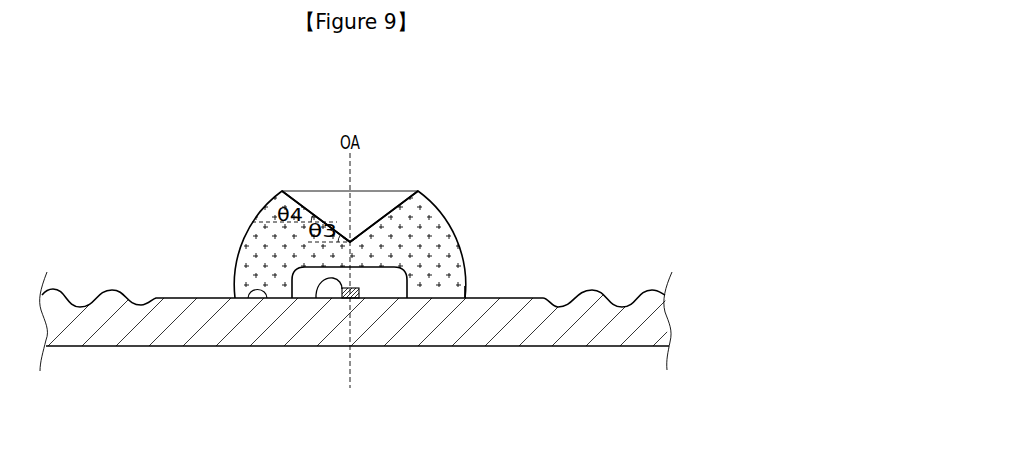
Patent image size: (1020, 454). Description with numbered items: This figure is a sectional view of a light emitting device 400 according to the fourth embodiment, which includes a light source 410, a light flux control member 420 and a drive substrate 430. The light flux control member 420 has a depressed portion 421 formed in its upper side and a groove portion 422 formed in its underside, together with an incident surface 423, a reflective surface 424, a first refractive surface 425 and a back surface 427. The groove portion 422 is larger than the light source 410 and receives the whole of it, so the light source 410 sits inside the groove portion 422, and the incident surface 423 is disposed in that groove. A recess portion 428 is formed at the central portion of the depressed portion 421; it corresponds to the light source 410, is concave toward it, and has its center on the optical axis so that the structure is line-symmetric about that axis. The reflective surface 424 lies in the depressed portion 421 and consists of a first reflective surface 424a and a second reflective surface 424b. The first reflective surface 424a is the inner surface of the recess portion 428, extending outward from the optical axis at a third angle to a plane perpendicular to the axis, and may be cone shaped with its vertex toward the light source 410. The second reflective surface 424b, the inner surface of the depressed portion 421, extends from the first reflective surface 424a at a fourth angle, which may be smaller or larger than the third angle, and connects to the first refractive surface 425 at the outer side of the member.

The light emitting device 400 is at (668, 97).
The light source 410 is at (360, 289).
The light flux control member 420 is at (398, 162).
The depressed portion 421 is at (323, 197).
The groove portion 422 is at (293, 297).
The incident surface 423 is at (316, 298).
The reflective surface 424 is at (504, 187).
The first reflective surface 424a is at (372, 238).
The second reflective surface 424b is at (399, 204).
The first refractive surface 425 is at (465, 270).
The back surface 427 is at (251, 299).
The recess portion 428 is at (355, 232).
The drive substrate 430 is at (548, 336).